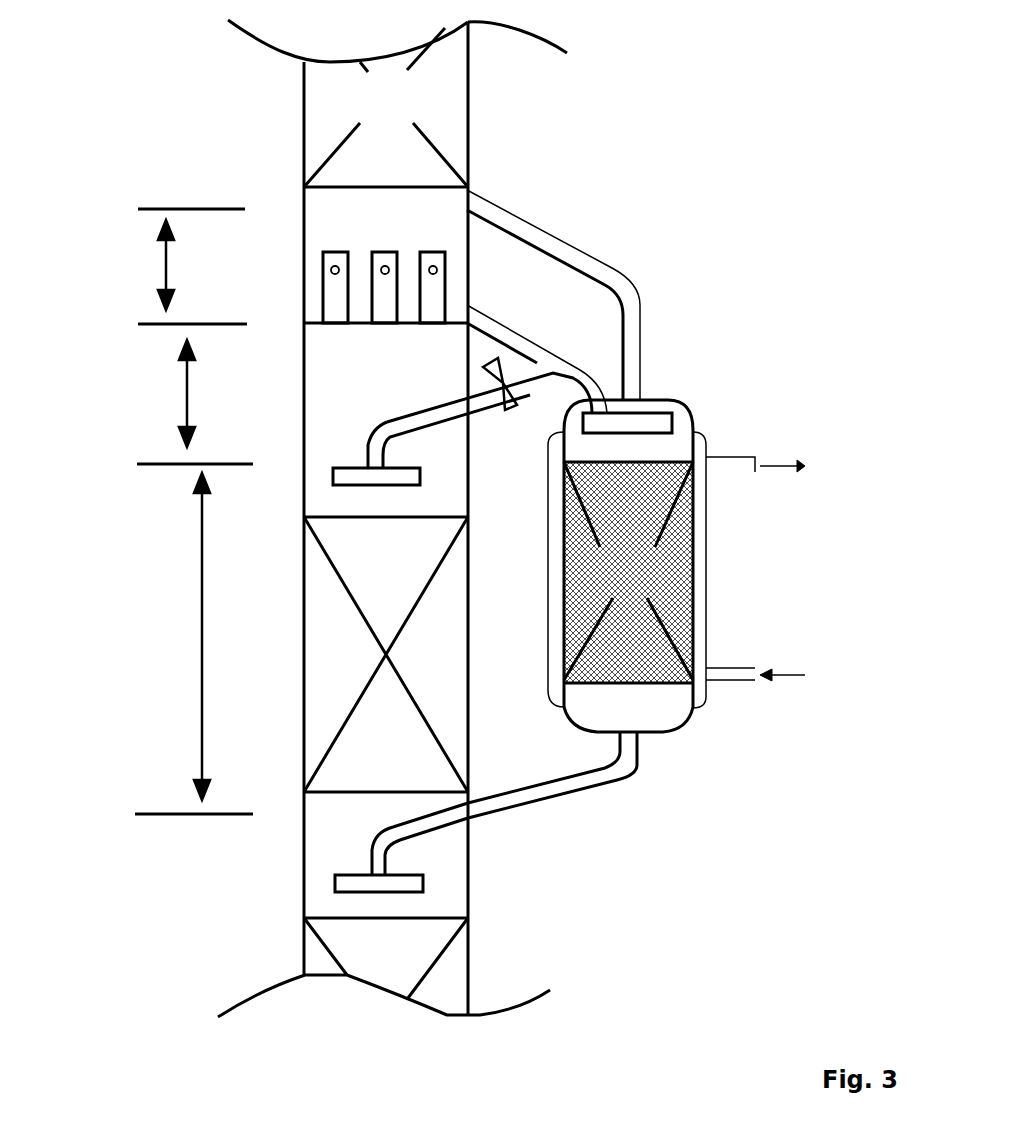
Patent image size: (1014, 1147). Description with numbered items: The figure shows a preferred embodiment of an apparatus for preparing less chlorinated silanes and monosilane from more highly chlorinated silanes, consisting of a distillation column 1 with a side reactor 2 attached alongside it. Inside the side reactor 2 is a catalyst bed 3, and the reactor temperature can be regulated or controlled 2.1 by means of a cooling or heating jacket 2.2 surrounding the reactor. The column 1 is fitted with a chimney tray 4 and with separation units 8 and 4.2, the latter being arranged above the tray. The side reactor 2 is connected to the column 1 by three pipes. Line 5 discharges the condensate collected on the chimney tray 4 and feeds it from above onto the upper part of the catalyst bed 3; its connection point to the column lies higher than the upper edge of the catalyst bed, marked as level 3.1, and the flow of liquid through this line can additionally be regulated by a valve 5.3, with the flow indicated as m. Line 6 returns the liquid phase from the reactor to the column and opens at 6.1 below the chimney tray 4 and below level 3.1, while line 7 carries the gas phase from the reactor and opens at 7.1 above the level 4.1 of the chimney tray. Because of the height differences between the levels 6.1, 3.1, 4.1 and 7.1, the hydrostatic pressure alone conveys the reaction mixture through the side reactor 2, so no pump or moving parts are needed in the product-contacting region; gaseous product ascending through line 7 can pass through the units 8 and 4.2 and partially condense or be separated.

The distillation column 1 is at (305, 903).
The side reactor 2 is at (723, 525).
The reactor temperature regulation 2.1 is at (802, 674).
The heating jacket 2.2 is at (708, 627).
The catalyst bed 3 is at (628, 572).
The upper edge level of the catalyst bed 3.1 is at (148, 617).
The chimney tray 4 is at (303, 322).
The level of the chimney tray 4.1 is at (147, 373).
The separation unit above chimney tray 4.2 is at (426, 258).
The condensate discharge line 5 is at (470, 381).
The liquid flow regulating valve 5.3 is at (443, 395).
The liquid phase discharge line 6 is at (486, 812).
The opening of the liquid return line 6.1 is at (135, 838).
The gas phase discharge line 7 is at (553, 295).
The opening of the gas phase line 7.1 is at (146, 248).
The separation packing units 8 is at (386, 513).
The mass flow m is at (538, 413).